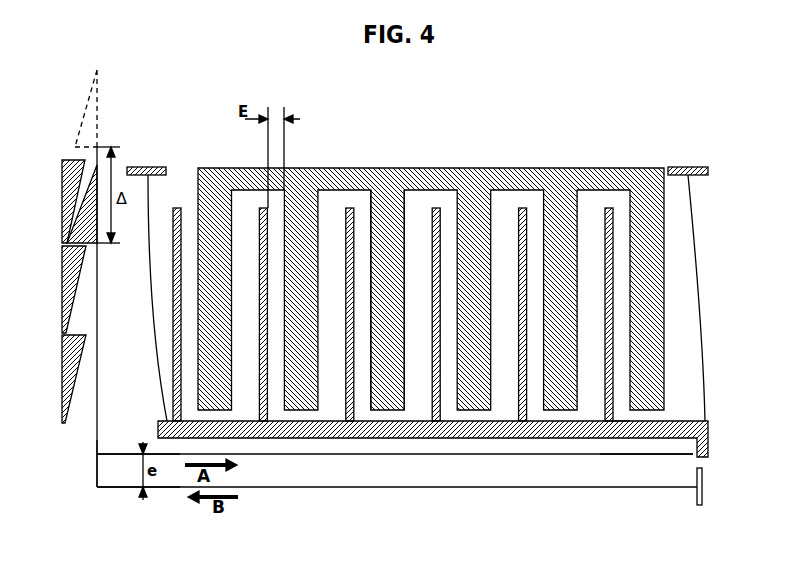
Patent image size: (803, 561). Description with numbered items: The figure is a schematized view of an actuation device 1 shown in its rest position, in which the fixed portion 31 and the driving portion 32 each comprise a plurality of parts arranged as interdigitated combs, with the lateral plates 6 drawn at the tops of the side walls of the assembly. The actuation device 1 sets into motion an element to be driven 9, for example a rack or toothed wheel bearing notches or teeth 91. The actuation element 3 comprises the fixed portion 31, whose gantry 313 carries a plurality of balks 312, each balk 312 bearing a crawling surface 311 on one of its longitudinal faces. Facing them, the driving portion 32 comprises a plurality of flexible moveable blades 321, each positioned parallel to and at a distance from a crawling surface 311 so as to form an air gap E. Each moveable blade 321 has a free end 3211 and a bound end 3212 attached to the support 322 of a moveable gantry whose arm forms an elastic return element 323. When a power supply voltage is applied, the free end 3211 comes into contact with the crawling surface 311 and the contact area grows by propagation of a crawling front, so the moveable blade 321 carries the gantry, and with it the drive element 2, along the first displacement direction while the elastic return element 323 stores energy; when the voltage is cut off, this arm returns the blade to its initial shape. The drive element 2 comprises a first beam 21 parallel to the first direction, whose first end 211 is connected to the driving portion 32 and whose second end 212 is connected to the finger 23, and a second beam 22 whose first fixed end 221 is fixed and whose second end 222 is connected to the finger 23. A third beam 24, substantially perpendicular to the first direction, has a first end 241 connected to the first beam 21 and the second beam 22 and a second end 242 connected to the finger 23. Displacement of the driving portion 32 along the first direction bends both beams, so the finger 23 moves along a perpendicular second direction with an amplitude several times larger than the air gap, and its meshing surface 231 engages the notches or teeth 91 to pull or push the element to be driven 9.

The actuation device 1 is at (437, 108).
The drive element 2 is at (292, 506).
The first beam 21 is at (357, 455).
The first end of first beam 211 is at (695, 460).
The second end of first beam 212 is at (107, 454).
The second beam 22 is at (354, 487).
The first fixed end of second beam 221 is at (703, 490).
The second end of second beam 222 is at (110, 487).
The finger 23 is at (96, 186).
The meshing surface 231 is at (62, 272).
The third beam 24 is at (98, 360).
The first end of third beam 241 is at (97, 454).
The second end of third beam 242 is at (99, 250).
The actuation element 3 is at (728, 283).
The fixed portion 31 is at (523, 180).
The crawling surface 311 is at (371, 218).
The balk 312 is at (400, 388).
The gantry of fixed portion 313 is at (470, 178).
The driving portion 32 is at (156, 418).
The moveable blade 321 is at (432, 222).
The free end of moveable blade 3211 is at (608, 226).
The bound end of moveable blade 3212 is at (616, 418).
The support 322 is at (708, 435).
The elastic return element 323 is at (700, 343).
The support plate 6 is at (147, 168).
The element to be driven 9 is at (62, 175).
The notches or teeth 91 is at (70, 336).